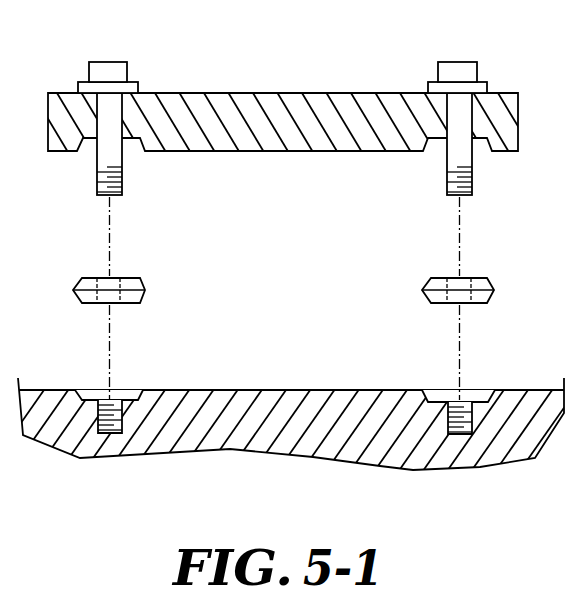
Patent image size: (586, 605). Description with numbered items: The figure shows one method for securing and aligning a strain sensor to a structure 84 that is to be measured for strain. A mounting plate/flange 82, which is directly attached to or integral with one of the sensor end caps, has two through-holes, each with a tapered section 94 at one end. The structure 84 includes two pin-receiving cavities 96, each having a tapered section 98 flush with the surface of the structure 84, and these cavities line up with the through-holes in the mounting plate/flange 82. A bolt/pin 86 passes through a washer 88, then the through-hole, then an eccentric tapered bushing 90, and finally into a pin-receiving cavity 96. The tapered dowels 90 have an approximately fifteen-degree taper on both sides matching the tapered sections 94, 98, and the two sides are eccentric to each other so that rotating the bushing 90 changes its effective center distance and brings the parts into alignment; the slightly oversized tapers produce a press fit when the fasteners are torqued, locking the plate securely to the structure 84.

The mounting plate/flange 82 is at (318, 102).
The structure 84 is at (280, 448).
The bolt/pin 86 is at (110, 61).
The washer 88 is at (138, 87).
The eccentric tapered bushing 90 is at (145, 290).
The tapered section 94 is at (90, 145).
The pin-receiving cavity 96 is at (115, 410).
The tapered section 98 is at (90, 395).